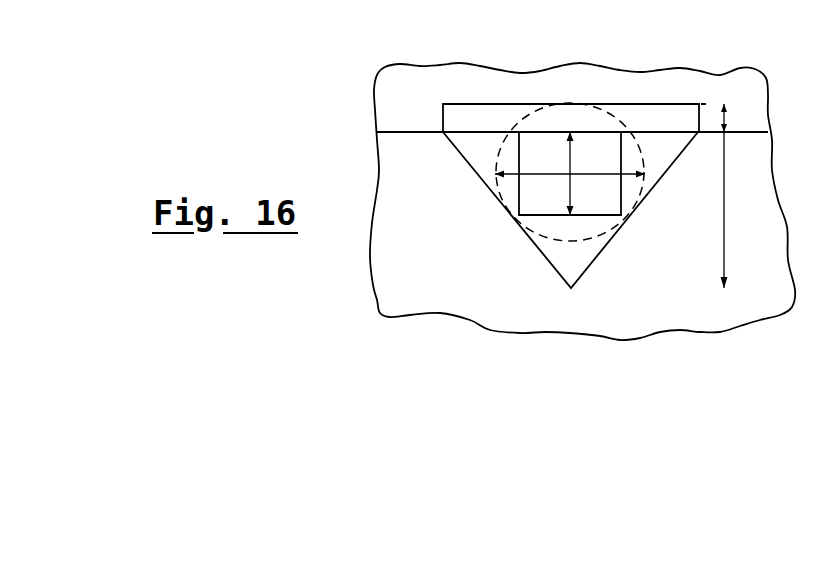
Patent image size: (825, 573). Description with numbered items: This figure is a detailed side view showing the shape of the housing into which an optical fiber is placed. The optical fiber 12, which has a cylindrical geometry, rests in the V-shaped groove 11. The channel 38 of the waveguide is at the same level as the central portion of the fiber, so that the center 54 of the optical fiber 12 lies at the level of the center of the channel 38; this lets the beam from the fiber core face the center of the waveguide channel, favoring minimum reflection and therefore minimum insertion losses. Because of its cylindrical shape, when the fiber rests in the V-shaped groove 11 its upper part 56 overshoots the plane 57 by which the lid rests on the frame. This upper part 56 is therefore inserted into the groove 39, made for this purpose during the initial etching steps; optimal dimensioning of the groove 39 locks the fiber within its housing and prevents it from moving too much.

The V-shaped groove 11 is at (543, 280).
The optical fiber 12 is at (596, 241).
The channel 38 is at (637, 193).
The groove 39 is at (663, 104).
The center 54 is at (568, 174).
The upper part 56 is at (567, 117).
The plane 57 is at (407, 132).